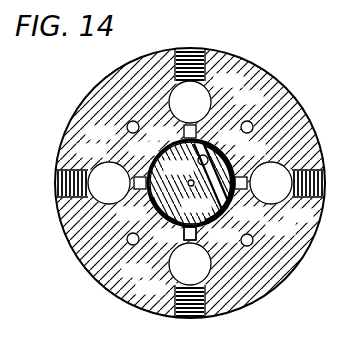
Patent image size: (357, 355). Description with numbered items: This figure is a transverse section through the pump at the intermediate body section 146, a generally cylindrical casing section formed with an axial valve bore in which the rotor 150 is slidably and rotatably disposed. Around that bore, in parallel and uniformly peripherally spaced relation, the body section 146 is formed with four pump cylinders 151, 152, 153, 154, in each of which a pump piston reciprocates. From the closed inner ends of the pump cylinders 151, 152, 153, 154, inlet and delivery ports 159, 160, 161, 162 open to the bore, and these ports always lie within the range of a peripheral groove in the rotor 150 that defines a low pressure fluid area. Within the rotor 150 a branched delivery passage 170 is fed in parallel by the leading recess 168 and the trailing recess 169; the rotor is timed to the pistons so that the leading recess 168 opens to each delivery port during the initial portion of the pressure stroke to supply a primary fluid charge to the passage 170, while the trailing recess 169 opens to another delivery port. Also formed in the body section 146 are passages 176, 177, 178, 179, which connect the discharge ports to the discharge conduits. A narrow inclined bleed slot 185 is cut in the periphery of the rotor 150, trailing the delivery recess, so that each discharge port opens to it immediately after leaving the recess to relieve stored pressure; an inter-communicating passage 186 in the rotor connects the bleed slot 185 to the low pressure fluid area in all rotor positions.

The intermediate body section 146 is at (280, 279).
The rotor 150 is at (160, 156).
The pump cylinder 151 is at (204, 84).
The pump cylinder 152 is at (110, 161).
The pump cylinder 153 is at (176, 285).
The pump cylinder 154 is at (291, 197).
The inlet and delivery port 159 is at (184, 131).
The inlet and delivery port 160 is at (138, 196).
The inlet and delivery port 161 is at (197, 233).
The inlet and delivery port 162 is at (253, 163).
The leading recess 168 is at (211, 140).
The trailing recess 169 is at (233, 196).
The branched delivery passage 170 is at (157, 170).
The passage 176 is at (130, 246).
The passage 177 is at (254, 236).
The passage 178 is at (250, 120).
The passage 179 is at (126, 128).
The bleed slot 185 is at (184, 232).
The inter-communicating passage 186 is at (190, 186).